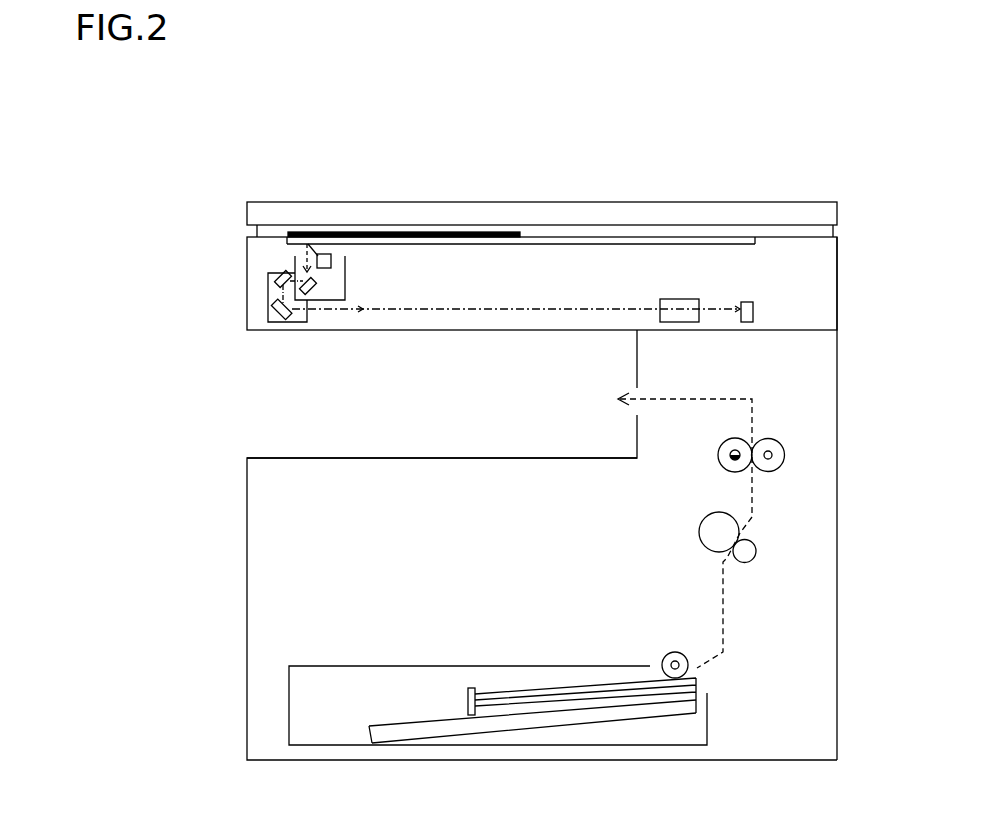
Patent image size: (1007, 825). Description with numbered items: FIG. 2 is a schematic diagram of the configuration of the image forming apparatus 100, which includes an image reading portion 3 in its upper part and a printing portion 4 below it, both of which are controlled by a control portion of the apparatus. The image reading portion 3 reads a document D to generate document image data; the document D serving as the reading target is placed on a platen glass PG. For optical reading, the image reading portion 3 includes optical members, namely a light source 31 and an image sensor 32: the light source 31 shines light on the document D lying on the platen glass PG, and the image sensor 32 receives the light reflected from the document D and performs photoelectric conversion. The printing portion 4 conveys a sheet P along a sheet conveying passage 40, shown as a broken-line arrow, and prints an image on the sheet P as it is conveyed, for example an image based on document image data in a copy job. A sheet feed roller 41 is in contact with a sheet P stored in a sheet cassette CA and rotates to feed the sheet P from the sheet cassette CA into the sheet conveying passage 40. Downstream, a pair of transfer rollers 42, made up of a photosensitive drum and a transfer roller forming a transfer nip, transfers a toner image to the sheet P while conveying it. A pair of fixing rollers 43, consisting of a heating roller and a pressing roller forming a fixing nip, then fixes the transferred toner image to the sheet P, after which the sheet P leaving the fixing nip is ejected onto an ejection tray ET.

The image forming apparatus 100 is at (213, 207).
The image reading portion 3 is at (848, 321).
The printing portion 4 is at (848, 494).
The document D is at (375, 237).
The platen glass PG is at (618, 244).
The light source 31 is at (332, 262).
The image sensor 32 is at (749, 301).
The ejection tray ET is at (470, 457).
The sheet conveying passage 40 is at (726, 620).
The sheet feed roller 41 is at (668, 654).
The pair of transfer rollers 42 is at (700, 535).
The pair of fixing rollers 43 is at (718, 456).
The sheet cassette CA is at (375, 665).
The sheet P is at (488, 694).